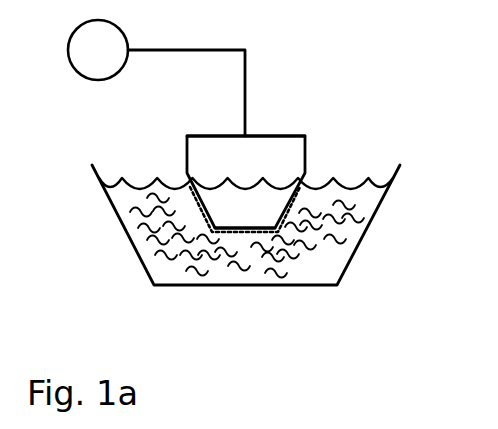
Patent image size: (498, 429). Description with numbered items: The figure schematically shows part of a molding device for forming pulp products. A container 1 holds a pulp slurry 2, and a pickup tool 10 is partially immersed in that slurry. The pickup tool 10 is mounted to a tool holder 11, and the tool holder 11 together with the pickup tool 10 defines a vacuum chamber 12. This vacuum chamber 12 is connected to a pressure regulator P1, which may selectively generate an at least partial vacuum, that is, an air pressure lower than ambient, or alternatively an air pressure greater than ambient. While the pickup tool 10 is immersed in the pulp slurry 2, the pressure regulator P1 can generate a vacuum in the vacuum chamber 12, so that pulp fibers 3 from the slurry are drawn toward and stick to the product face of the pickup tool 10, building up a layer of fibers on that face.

The container 1 is at (140, 268).
The pulp slurry 2 is at (163, 243).
The pulp fibers 3 is at (247, 229).
The pickup tool 10 is at (258, 228).
The tool holder 11 is at (287, 137).
The vacuum chamber 12 is at (258, 165).
The pressure regulator P1 is at (156, 78).